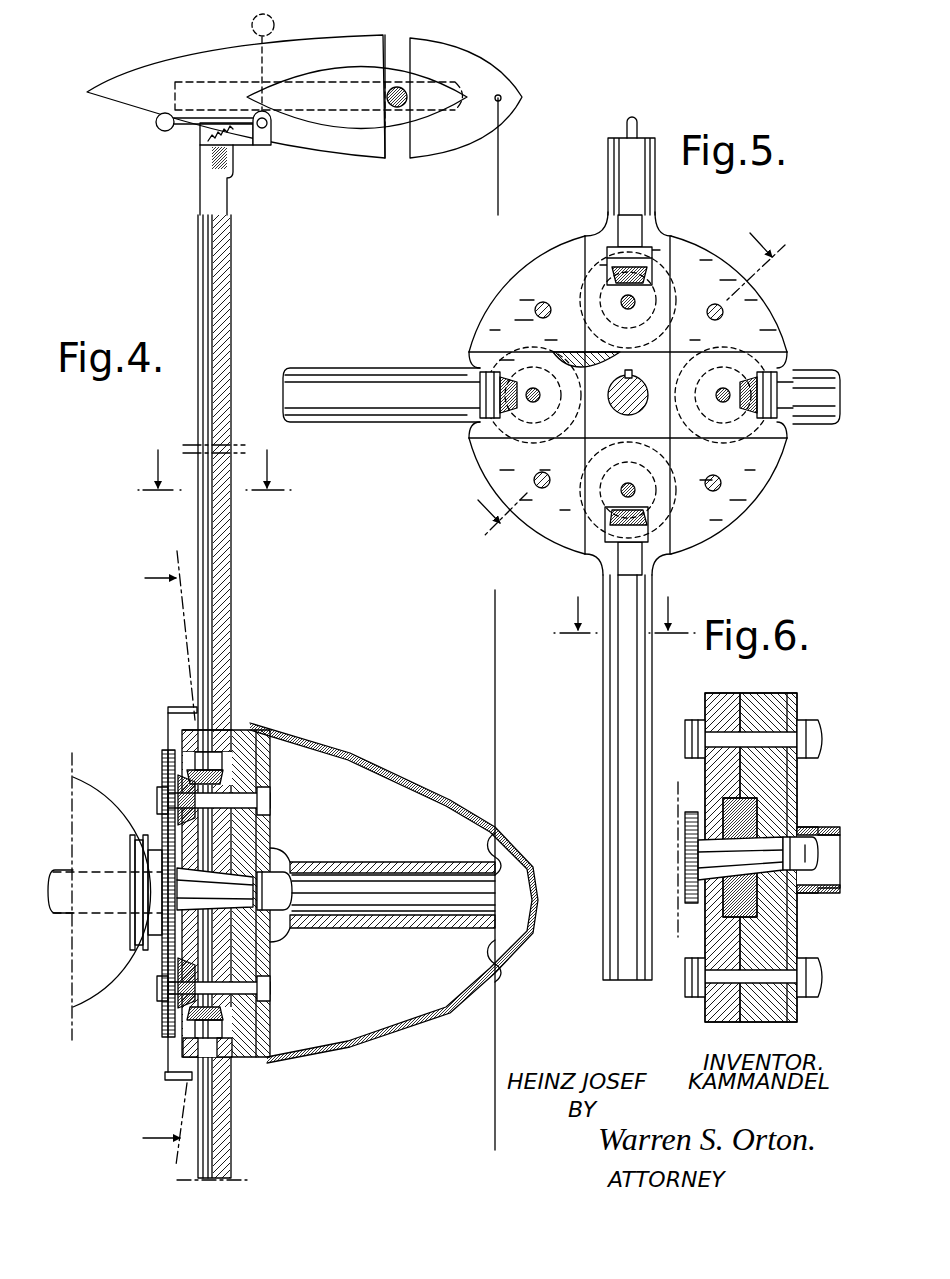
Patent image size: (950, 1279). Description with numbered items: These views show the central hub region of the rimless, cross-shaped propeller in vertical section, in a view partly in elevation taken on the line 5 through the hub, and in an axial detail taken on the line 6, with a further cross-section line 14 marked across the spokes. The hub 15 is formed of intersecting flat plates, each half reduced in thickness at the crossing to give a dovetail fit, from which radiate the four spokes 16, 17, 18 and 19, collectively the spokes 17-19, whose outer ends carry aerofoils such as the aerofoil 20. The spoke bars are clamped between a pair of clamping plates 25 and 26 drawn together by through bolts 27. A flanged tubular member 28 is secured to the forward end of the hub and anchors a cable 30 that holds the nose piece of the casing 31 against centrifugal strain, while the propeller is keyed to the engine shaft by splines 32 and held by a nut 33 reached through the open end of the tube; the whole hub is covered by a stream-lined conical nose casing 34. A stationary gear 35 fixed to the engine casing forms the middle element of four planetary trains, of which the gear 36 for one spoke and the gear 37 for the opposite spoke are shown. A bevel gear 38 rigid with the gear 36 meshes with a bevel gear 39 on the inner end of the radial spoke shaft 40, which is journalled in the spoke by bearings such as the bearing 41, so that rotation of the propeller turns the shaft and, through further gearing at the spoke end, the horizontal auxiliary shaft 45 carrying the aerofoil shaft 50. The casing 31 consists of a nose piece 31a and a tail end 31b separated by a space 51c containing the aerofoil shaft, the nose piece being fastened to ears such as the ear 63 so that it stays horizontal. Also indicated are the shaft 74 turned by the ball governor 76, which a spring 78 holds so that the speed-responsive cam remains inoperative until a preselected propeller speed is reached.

In FIG. 4, the section line 5— 5 is at (164, 860).
In FIG. 5, the section line 6— 6 is at (623, 377).
In FIG. 4, the section line 14— 14 is at (215, 470).
In FIG. 5, the section line 14— 14 is at (623, 615).
In FIG. 4, the hub 15 is at (270, 822).
In FIG. 6, the hub 15 is at (722, 690).
In FIG. 4, the spoke 16 is at (226, 566).
In FIG. 5, the spoke 16 is at (612, 176).
In FIG. 5, the spoke 17 is at (378, 367).
In FIG. 4, the spokes 17-19 is at (213, 863).
In FIG. 4, the spoke 18 is at (222, 1152).
In FIG. 5, the spoke 18 is at (603, 684).
In FIG. 5, the spoke 19 is at (826, 362).
In FIG. 4, the aerofoil 20 is at (312, 105).
In FIG. 4, the clamping plate 25 is at (180, 965).
In FIG. 6, the clamping plate 25 is at (716, 1000).
In FIG. 4, the clamping plate 26 is at (237, 1050).
In FIG. 6, the clamping plate 26 is at (760, 1010).
In FIG. 4, the through bolt 27 is at (270, 990).
In FIG. 5, the through bolt 27 is at (725, 311).
In FIG. 6, the through bolt 27 is at (770, 738).
In FIG. 4, the flanged tubular member 28 is at (285, 930).
In FIG. 6, the flanged tubular member 28 is at (830, 826).
In FIG. 4, the cable 30 is at (495, 194).
In FIG. 4, the casing 31 is at (312, 91).
In FIG. 4, the nose piece 31a is at (462, 54).
In FIG. 4, the tail end 31b is at (188, 64).
In FIG. 4, the splines 32 is at (215, 889).
In FIG. 5, the splines 32 is at (633, 378).
In FIG. 4, the nut 33 is at (297, 898).
In FIG. 4, the nose casing 34 is at (310, 1055).
In FIG. 4, the stationary gear 35 is at (168, 880).
In FIG. 5, the stationary gear 35 is at (580, 350).
In FIG. 6, the stationary gear 35 is at (690, 874).
In FIG. 4, the gear 36 is at (168, 712).
In FIG. 4, the gear 37 is at (165, 1012).
In FIG. 4, the bevel gear 38 is at (182, 786).
In FIG. 4, the bevel gear 39 is at (225, 779).
In FIG. 5, the bevel gear 39 is at (645, 272).
In FIG. 4, the spoke shaft 40 is at (203, 276).
In FIG. 5, the spoke shaft 40 is at (632, 126).
In FIG. 4, the bearing 41 is at (203, 740).
In FIG. 4, the auxiliary shaft 45 is at (318, 82).
In FIG. 4, the aerofoil shaft 50 is at (397, 108).
In FIG. 4, the space 51c is at (400, 52).
In FIG. 4, the ear 63 is at (319, 117).
In FIG. 4, the shaft 74 is at (260, 135).
In FIG. 4, the ball governor 76 is at (155, 123).
In FIG. 4, the spring 78 is at (205, 138).